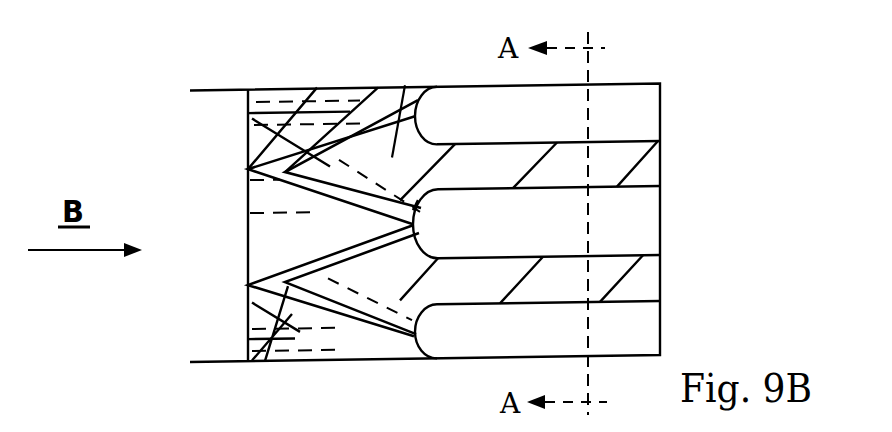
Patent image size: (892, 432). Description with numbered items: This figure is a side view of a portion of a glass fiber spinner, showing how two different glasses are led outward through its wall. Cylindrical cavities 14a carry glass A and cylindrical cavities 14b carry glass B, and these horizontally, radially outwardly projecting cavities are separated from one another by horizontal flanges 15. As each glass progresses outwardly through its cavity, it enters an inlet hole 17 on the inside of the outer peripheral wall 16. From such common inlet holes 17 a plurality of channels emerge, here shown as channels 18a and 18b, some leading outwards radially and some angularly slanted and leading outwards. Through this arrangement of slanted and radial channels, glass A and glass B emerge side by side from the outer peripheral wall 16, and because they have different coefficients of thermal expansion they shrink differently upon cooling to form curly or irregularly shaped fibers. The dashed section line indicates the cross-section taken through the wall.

The cylindrical cavity for glass A 14a is at (625, 225).
The cylindrical cavity for glass B 14b is at (622, 332).
The horizontal flange 15 is at (603, 162).
The outer peripheral wall 16 is at (405, 85).
The inlet hole 17 is at (413, 230).
The channel 18a is at (250, 170).
The channel 18b is at (250, 258).